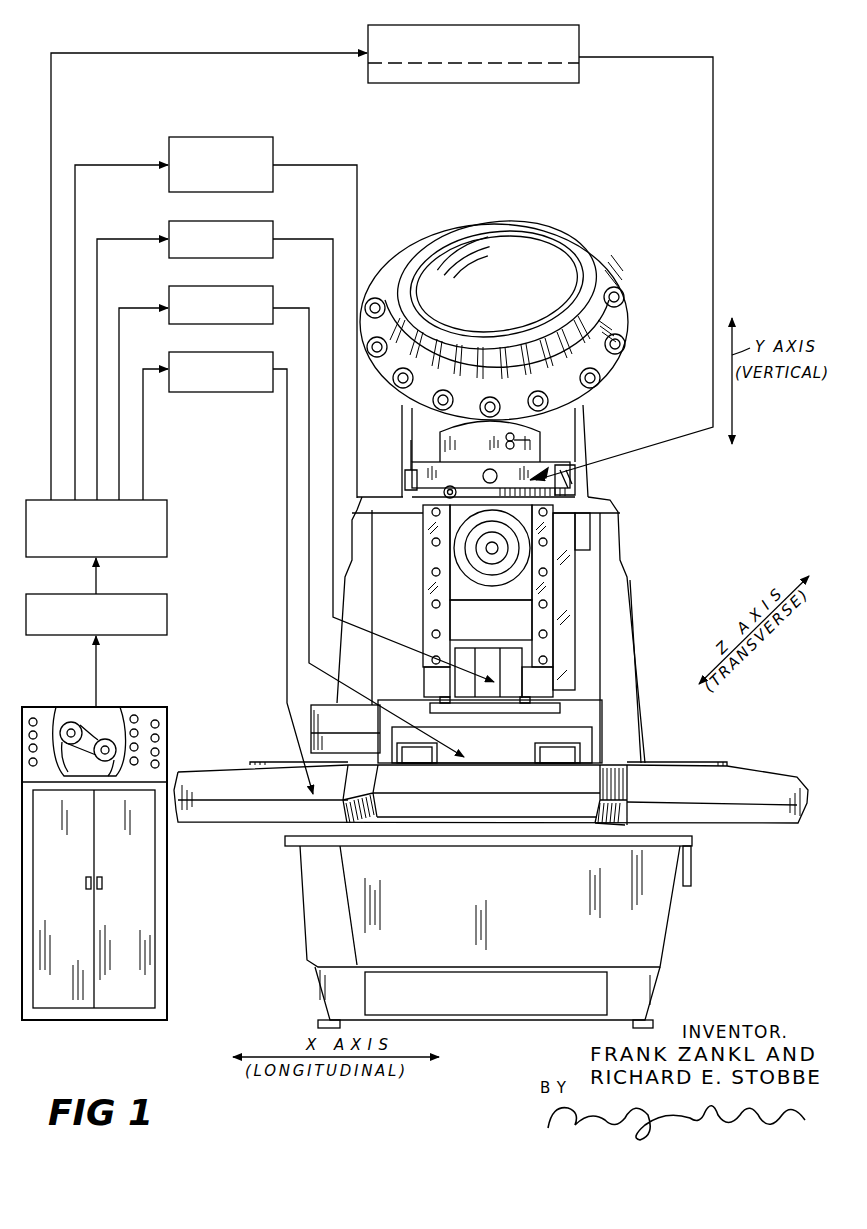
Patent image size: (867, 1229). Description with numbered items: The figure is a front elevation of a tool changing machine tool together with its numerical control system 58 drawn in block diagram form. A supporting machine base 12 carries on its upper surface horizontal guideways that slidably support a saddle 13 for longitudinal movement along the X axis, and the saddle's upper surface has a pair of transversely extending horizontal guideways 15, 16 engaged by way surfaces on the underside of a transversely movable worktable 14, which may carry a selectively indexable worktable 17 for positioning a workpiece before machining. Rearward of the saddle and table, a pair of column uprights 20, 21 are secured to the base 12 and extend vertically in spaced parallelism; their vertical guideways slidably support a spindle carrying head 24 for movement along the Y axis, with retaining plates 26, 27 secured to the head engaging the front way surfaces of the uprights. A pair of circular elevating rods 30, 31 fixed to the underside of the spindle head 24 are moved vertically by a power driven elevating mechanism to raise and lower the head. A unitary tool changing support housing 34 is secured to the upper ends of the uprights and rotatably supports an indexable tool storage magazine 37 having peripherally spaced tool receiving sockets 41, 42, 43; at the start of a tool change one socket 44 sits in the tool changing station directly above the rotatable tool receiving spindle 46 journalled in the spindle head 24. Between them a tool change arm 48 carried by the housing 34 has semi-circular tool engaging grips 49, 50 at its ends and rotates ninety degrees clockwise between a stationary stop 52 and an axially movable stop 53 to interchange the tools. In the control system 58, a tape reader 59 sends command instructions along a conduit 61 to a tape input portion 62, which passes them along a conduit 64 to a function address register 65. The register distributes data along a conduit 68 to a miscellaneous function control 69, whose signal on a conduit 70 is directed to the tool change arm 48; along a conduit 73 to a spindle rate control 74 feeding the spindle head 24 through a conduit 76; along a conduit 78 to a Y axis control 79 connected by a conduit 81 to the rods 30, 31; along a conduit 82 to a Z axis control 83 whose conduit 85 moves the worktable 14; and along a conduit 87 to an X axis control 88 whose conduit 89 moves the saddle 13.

The machine base 12 is at (322, 912).
The saddle 13 is at (252, 815).
The worktable 14 is at (590, 722).
The horizontal guideway 15 is at (414, 760).
The horizontal guideway 16 is at (555, 760).
The indexable worktable 17 is at (480, 705).
The column upright 20 is at (372, 555).
The column upright 21 is at (614, 632).
The spindle carrying head 24 is at (530, 625).
The retaining plate 26 is at (423, 620).
The retaining plate 27 is at (590, 520).
The elevating rod 30 is at (455, 680).
The elevating rod 31 is at (553, 685).
The tool changing support housing 34 is at (582, 448).
The tool storage magazine 37 is at (505, 250).
The tool receiving socket 41 is at (605, 378).
The tool receiving socket 42 is at (626, 344).
The tool receiving socket 43 is at (622, 292).
The tool storage socket 44 is at (490, 402).
The tool receiving spindle 46 is at (496, 548).
The tool change arm 48 is at (418, 483).
The tool engaging grip 49 is at (455, 470).
The tool engaging grip 50 is at (575, 485).
The stationary stop 52 is at (486, 624).
The stop 53 is at (530, 440).
The numerical control system 58 is at (138, 1018).
The tape reader 59 is at (110, 730).
The conduit 61 is at (96, 675).
The tape input portion 62 is at (158, 612).
The conduit 64 is at (96, 580).
The function address register 65 is at (167, 512).
The conduit 68 is at (103, 53).
The miscellaneous function control 69 is at (579, 37).
The conduit 70 is at (713, 121).
The conduit 73 is at (88, 165).
The spindle rate control 74 is at (273, 152).
The conduit 76 is at (360, 175).
The conduit 78 is at (105, 239).
The Y axis control 79 is at (273, 232).
The conduit 81 is at (333, 640).
The conduit 82 is at (145, 308).
The Z axis control 83 is at (273, 297).
The conduit 85 is at (330, 685).
The conduit 87 is at (152, 369).
The X axis control 88 is at (232, 392).
The conduit 89 is at (288, 735).